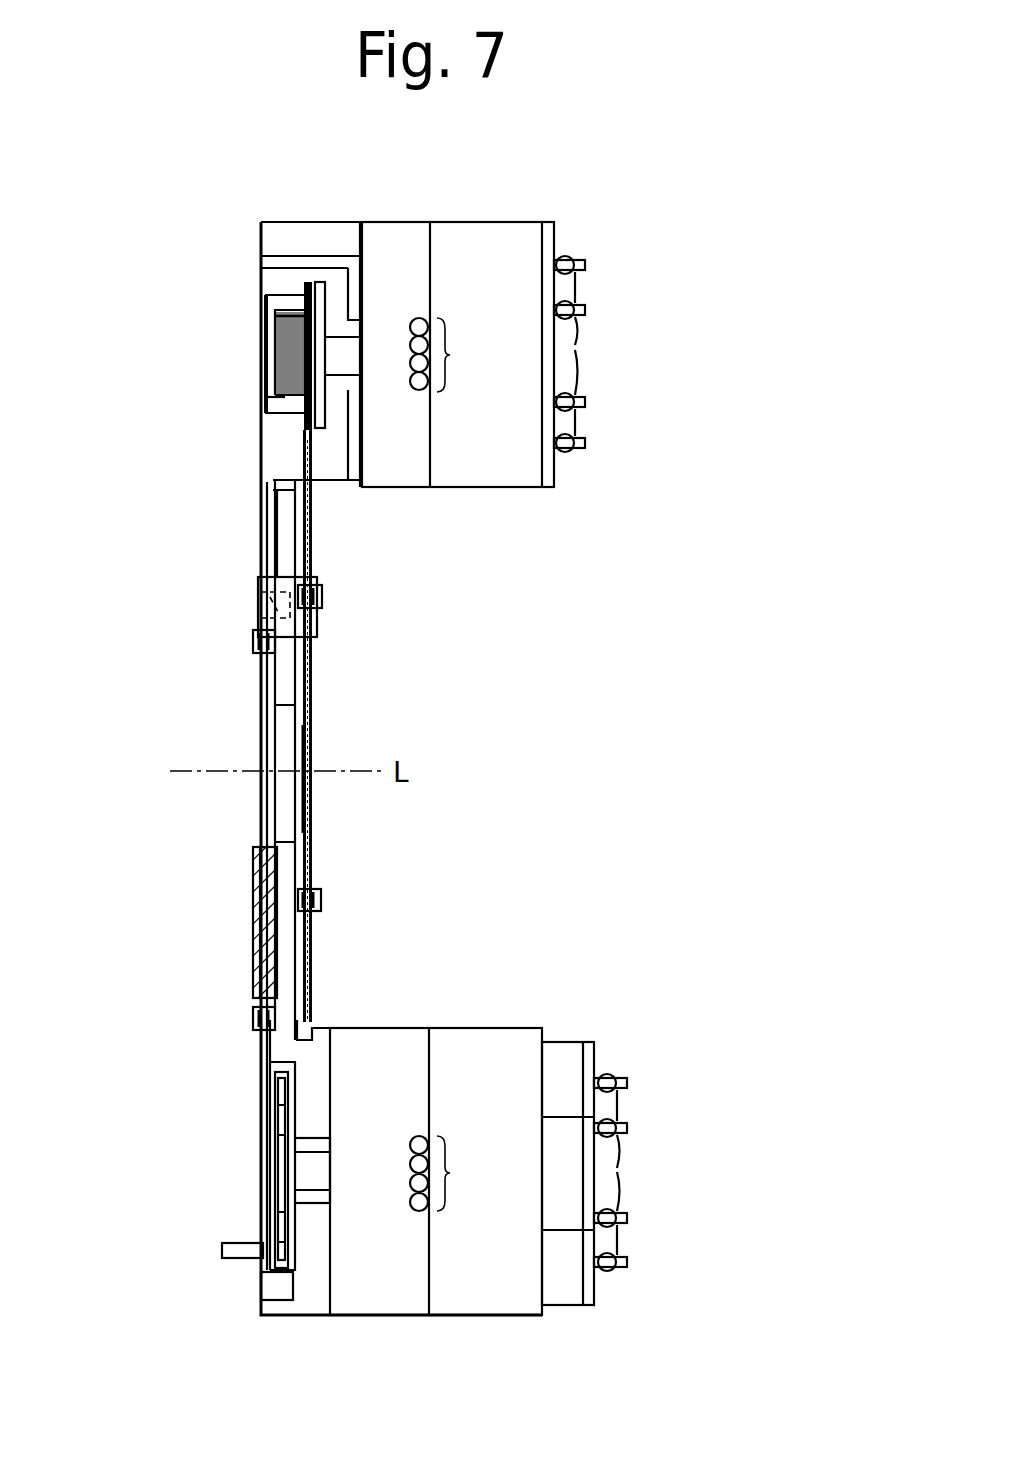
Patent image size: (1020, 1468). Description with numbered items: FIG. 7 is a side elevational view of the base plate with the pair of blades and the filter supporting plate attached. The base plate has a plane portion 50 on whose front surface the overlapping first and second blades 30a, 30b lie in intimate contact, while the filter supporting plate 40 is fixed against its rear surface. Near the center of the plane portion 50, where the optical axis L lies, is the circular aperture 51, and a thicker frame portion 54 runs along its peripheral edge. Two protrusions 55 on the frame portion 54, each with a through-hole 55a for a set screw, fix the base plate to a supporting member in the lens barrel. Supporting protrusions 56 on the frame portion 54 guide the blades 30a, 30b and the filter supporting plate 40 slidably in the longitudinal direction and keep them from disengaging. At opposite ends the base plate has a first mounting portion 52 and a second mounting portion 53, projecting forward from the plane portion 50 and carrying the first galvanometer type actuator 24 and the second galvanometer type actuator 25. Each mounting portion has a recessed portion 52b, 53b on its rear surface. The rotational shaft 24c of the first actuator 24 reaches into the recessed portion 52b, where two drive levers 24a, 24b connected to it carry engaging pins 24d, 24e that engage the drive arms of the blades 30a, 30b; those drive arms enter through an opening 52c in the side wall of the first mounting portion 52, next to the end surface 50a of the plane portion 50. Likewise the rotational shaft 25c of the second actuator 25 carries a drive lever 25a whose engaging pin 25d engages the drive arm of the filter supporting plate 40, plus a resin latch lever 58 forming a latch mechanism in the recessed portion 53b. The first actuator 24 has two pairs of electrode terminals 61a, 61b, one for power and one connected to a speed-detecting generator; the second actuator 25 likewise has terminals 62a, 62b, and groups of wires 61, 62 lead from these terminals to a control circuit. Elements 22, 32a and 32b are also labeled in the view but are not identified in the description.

The magnetic body 22 is at (269, 882).
The first galvanometer type actuator 24 is at (497, 214).
The drive lever 24a is at (324, 299).
The drive lever 24b is at (318, 412).
The rotational shaft 24c is at (365, 345).
The engaging pin 24d is at (285, 303).
The engaging pin 24e is at (285, 408).
The second galvanometer type actuator 25 is at (497, 1023).
The drive lever 25a is at (283, 1213).
The rotational shaft 25c is at (313, 1172).
The engaging pin 25d is at (222, 1250).
The first blade 30a is at (313, 553).
The second blade 30b is at (313, 515).
The lower magnet 32a is at (313, 801).
The upper magnet 32b is at (313, 742).
The filter supporting plate 40 is at (267, 792).
The plane portion 50 is at (287, 528).
The end surface 50a is at (273, 481).
The circular aperture 51 is at (285, 708).
The first mounting portion 52 is at (355, 404).
The recessed portion 52b is at (288, 273).
The opening 52c is at (345, 471).
The second mounting portion 53 is at (313, 1078).
The recessed portion 53b is at (283, 1289).
The frame portion 54 is at (313, 1003).
The protrusion 55 is at (286, 572).
The through-hole 55a is at (262, 601).
The supporting protrusion 56 is at (255, 643).
The latch lever 58 is at (280, 1088).
The group of wires 61 is at (447, 355).
The electrode terminals 61a is at (580, 270).
The electrode terminals 61b is at (580, 448).
The group of wires 62 is at (447, 1173).
The electrode terminals 62a is at (628, 1088).
The electrode terminals 62b is at (628, 1265).